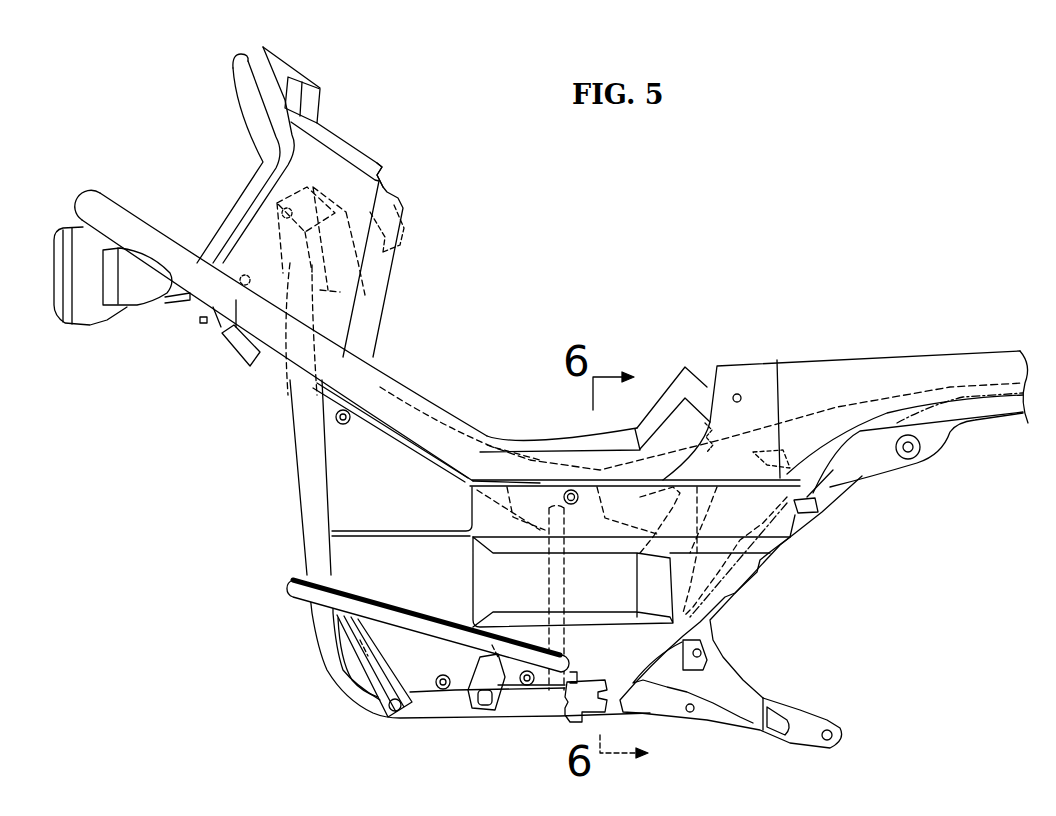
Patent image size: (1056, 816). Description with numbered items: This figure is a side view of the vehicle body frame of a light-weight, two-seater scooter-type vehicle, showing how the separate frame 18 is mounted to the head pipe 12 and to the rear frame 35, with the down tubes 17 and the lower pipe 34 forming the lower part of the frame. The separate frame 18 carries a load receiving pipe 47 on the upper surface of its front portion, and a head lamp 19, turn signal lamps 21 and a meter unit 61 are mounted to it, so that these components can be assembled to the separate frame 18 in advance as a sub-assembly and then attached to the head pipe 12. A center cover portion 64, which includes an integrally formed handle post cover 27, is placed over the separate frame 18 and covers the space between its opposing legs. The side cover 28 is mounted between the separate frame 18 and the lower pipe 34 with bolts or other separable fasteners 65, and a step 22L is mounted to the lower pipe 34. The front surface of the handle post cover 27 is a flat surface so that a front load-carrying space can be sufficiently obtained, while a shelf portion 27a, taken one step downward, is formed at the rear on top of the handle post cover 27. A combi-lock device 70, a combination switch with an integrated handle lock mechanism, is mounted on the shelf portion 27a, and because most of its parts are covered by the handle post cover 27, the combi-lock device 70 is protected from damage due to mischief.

The head pipe 12 is at (320, 258).
The down tubes 17 is at (313, 511).
The separate frame 18 is at (420, 427).
The head lamp 19 is at (87, 320).
The turn signal lamps 21 is at (140, 290).
The step 22L is at (324, 597).
The handle post cover 27 is at (361, 210).
The shelf portion 27a is at (416, 195).
The side cover 28 is at (435, 570).
The lower pipe 34 is at (457, 705).
The rear frame 35 is at (817, 417).
The load receiving pipe 47 is at (233, 213).
The meter unit 61 is at (308, 91).
The center cover portion 64 is at (480, 440).
The separable fasteners 65 is at (338, 425).
The combi-lock device 70 is at (392, 246).